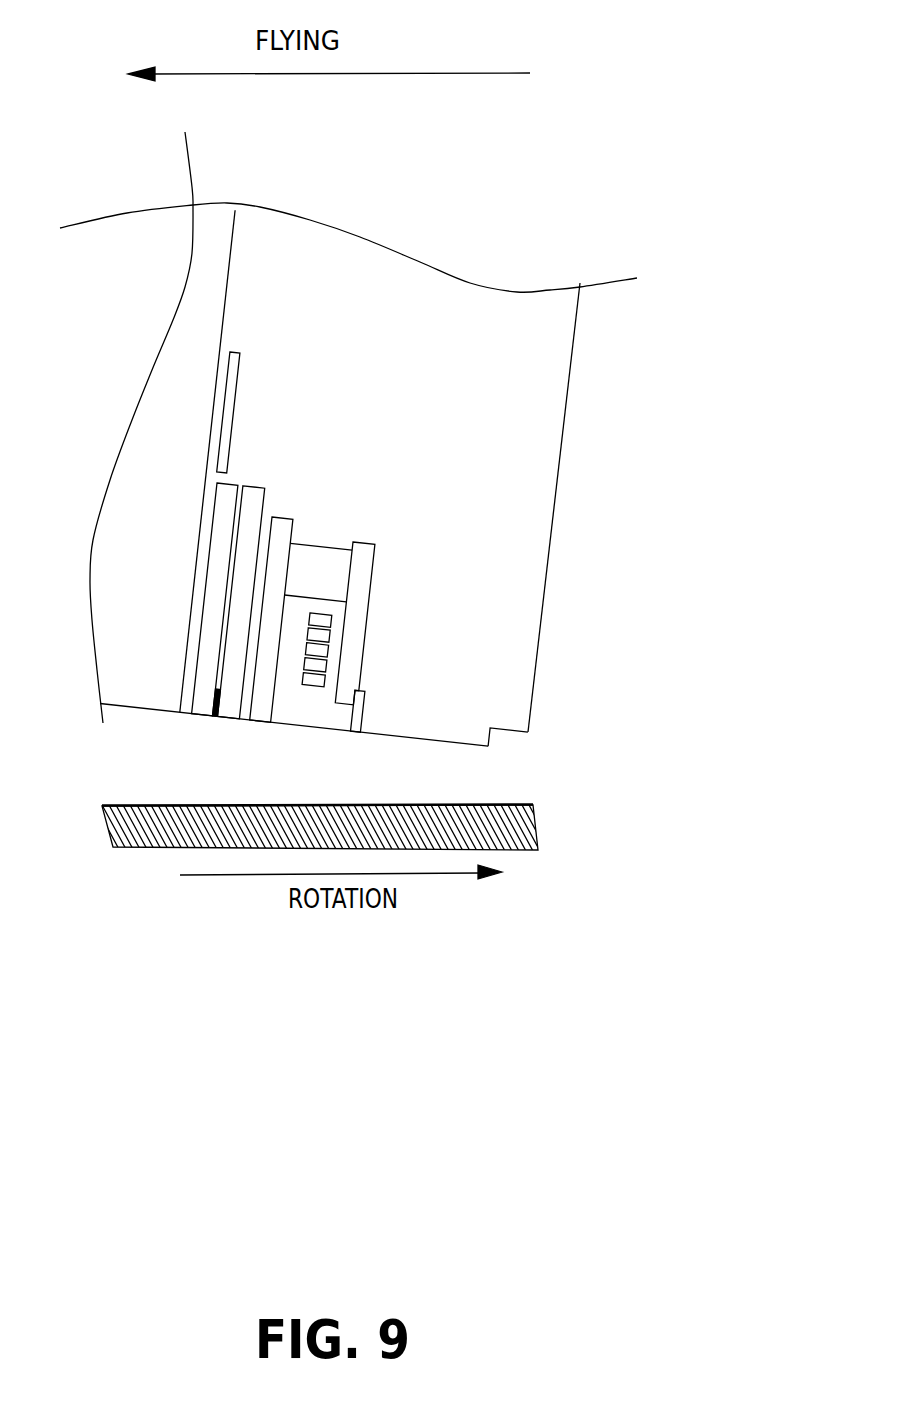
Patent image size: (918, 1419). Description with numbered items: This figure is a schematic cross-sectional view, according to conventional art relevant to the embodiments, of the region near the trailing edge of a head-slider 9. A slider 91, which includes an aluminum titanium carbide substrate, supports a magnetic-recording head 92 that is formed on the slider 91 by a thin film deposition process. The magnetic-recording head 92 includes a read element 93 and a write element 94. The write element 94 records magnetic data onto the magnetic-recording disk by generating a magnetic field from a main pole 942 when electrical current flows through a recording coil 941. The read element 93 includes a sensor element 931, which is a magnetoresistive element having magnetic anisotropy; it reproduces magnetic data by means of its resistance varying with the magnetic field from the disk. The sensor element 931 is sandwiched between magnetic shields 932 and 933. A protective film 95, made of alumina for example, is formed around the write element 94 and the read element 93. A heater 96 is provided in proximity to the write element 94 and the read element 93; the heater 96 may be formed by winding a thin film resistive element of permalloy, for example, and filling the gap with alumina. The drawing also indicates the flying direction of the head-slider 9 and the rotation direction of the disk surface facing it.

The head-slider 9 is at (559, 191).
The slider 91 is at (141, 592).
The magnetic-recording head 92 is at (592, 453).
The read element 93 is at (257, 576).
The sensor element 931 is at (215, 721).
The magnetic shield 932 is at (212, 537).
The magnetic shield 933 is at (266, 490).
The write element 94 is at (375, 575).
The recording coil 941 is at (332, 616).
The main pole 942 is at (368, 707).
The protective film 95 is at (471, 497).
The heater 96 is at (241, 354).